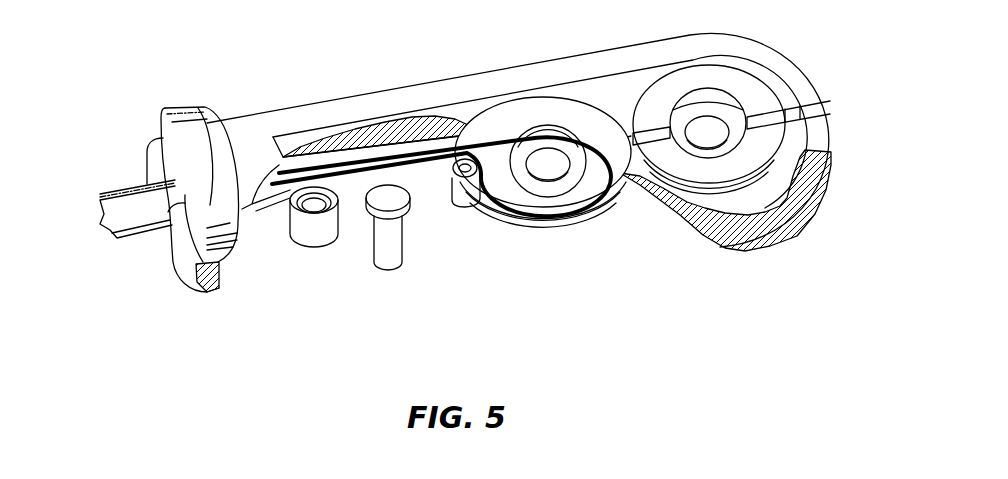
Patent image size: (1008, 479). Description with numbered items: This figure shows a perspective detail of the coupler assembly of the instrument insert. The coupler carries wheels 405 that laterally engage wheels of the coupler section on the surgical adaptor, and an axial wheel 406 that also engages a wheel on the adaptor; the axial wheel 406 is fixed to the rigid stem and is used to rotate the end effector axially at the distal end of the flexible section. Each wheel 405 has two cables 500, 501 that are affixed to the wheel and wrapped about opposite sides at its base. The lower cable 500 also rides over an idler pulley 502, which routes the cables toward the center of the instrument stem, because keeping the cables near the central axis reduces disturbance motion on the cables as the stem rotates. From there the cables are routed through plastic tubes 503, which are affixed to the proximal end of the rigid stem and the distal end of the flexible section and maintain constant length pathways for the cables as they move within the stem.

The wheel 405 is at (570, 238).
The axial wheel 406 is at (237, 248).
The lower cable 500 is at (400, 168).
The cable 501 is at (425, 168).
The idler pulley 502 is at (413, 114).
The plastic tube 503 is at (267, 203).